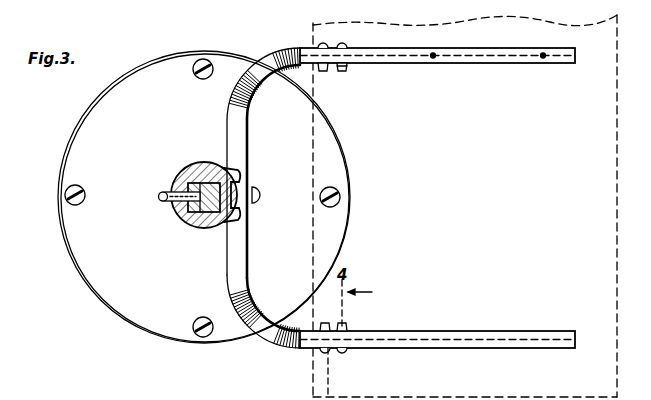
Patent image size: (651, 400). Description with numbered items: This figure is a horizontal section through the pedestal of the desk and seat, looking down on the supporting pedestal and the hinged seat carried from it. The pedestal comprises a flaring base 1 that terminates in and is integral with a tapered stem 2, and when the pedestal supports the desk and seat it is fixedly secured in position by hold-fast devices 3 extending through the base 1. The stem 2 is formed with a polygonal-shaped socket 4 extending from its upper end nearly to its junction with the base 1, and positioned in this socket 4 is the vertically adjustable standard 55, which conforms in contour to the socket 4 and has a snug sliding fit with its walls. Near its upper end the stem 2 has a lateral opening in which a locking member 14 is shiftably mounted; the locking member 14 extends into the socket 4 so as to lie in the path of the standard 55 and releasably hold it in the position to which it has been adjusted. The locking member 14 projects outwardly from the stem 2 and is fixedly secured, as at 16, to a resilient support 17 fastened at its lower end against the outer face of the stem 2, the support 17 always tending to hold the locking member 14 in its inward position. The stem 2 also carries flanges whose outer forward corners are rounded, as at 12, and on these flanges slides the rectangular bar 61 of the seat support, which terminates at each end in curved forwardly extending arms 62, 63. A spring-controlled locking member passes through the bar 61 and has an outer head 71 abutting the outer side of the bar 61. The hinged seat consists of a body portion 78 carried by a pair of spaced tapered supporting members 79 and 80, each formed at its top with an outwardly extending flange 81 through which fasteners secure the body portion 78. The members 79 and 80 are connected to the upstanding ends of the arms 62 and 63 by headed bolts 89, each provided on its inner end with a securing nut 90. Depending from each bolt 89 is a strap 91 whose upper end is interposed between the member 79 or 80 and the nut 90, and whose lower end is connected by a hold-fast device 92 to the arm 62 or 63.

The base 1 is at (204, 197).
The stem 2 is at (215, 197).
The hold-fast devices 3 is at (200, 80).
The polygonal-shaped socket 4 is at (188, 181).
The rounded corner 12 is at (239, 173).
The locking member 14 is at (176, 212).
The securing point 16 is at (164, 199).
The resilient support 17 is at (166, 192).
The vertically adjustable standard 55 is at (198, 183).
The rectangular bar 61 is at (263, 199).
The curved forwardly extending arm 62 is at (295, 43).
The curved forwardly extending arm 63 is at (286, 331).
The head 71 is at (264, 192).
The body portion 78 is at (613, 143).
The supporting member 79 is at (437, 201).
The supporting member 80 is at (492, 327).
The outwardly extending flange 81 is at (538, 47).
The headed bolt 89 is at (342, 73).
The securing nut 90 is at (348, 323).
The strap 91 is at (350, 67).
The hold-fast device 92 is at (324, 72).